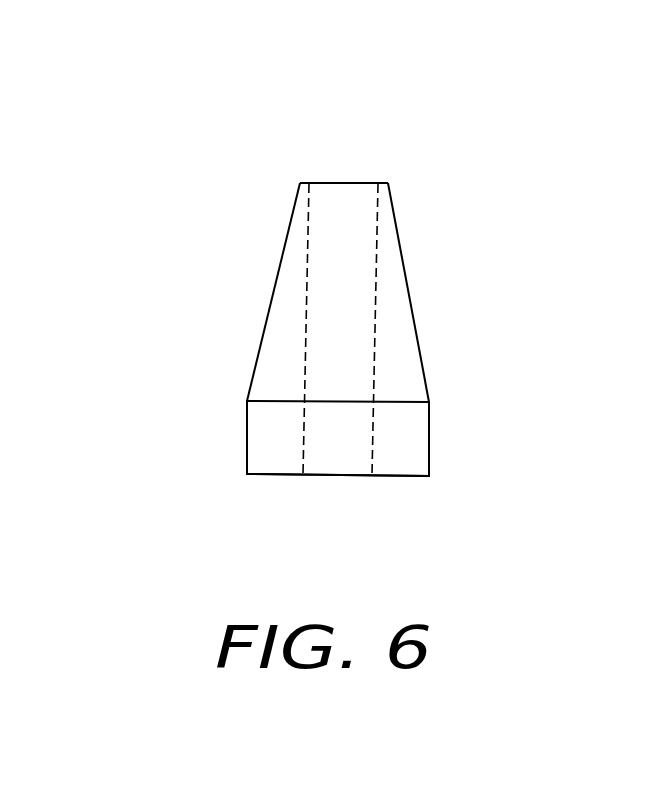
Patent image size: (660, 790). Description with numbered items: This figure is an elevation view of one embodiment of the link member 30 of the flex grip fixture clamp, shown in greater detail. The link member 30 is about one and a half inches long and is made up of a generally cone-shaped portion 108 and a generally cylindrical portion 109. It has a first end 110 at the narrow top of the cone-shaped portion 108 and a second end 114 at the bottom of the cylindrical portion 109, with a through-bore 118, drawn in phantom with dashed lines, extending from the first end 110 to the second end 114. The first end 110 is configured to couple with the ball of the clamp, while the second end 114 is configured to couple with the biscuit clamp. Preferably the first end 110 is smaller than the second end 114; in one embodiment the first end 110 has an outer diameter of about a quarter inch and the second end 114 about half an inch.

The link member 30 is at (563, 209).
The cone-shaped portion 108 is at (257, 352).
The cylindrical portion 109 is at (247, 441).
The first end 110 is at (302, 182).
The second end 114 is at (394, 477).
The through-bore 118 is at (376, 357).